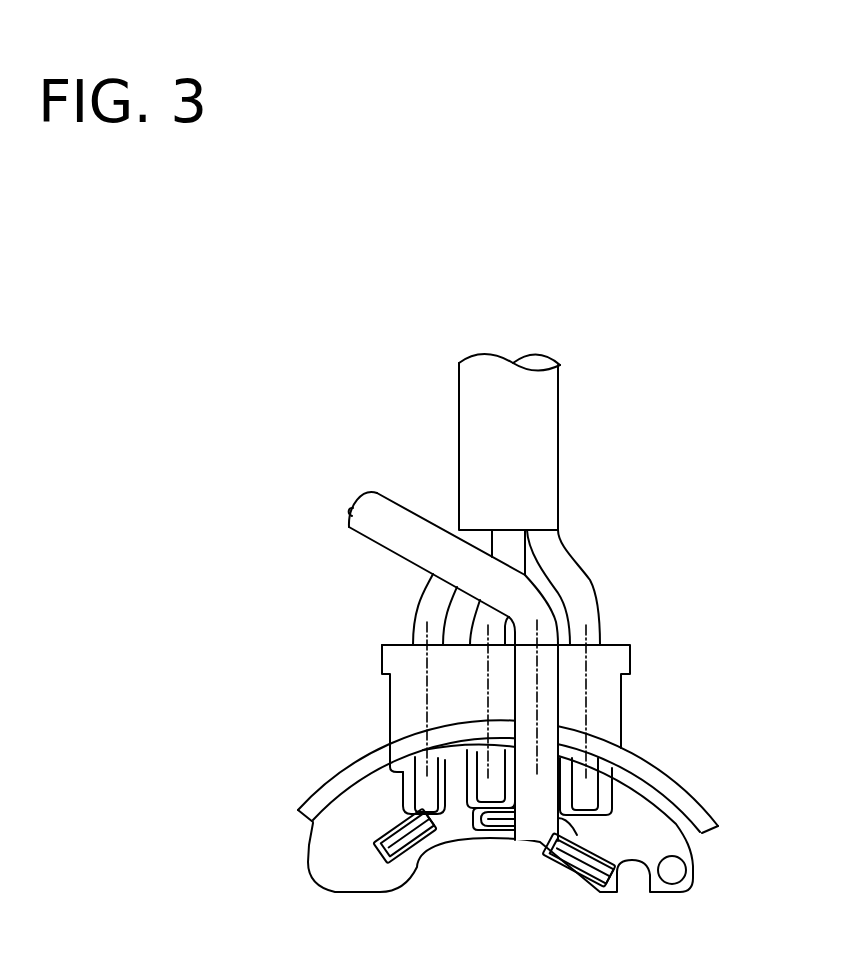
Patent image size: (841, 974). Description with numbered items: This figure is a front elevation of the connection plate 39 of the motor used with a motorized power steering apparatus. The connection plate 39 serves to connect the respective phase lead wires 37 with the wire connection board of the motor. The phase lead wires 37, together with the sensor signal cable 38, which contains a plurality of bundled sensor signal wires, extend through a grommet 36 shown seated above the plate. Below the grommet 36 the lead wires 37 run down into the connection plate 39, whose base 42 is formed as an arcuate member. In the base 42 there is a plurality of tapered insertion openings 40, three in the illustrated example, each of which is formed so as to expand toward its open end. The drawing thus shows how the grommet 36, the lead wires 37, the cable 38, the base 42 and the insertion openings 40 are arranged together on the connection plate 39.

The grommet 36 is at (603, 668).
The phase lead wires 37 is at (426, 606).
The sensor signal cable 38 is at (391, 517).
The connection plate 39 is at (622, 807).
The tapered insertion openings 40 is at (411, 845).
The base 42 is at (655, 845).